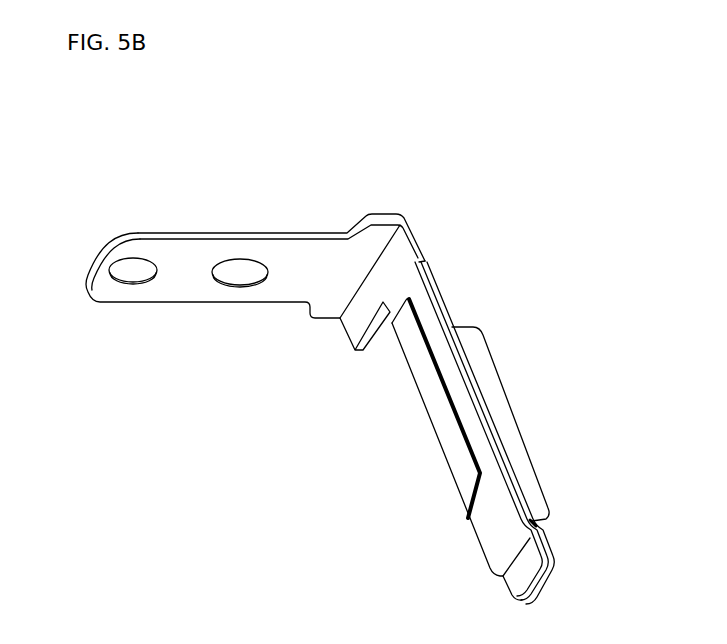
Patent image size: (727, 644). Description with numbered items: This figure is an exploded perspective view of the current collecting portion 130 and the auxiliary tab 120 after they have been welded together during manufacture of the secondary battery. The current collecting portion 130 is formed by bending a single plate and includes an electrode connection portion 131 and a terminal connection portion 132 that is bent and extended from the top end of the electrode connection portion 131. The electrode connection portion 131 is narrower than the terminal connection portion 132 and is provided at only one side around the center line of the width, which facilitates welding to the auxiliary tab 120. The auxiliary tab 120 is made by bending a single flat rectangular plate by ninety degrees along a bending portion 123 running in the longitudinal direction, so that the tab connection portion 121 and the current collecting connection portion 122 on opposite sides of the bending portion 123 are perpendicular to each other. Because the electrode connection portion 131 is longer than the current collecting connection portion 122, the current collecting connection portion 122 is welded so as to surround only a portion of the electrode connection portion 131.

The current collecting portion 130 is at (467, 153).
The electrode connection portion 131 is at (425, 303).
The terminal connection portion 132 is at (312, 252).
The auxiliary tab 120 is at (327, 368).
The tab connection portion 121 is at (498, 428).
The current collecting connection portion 122 is at (422, 378).
The bending portion 123 is at (425, 417).